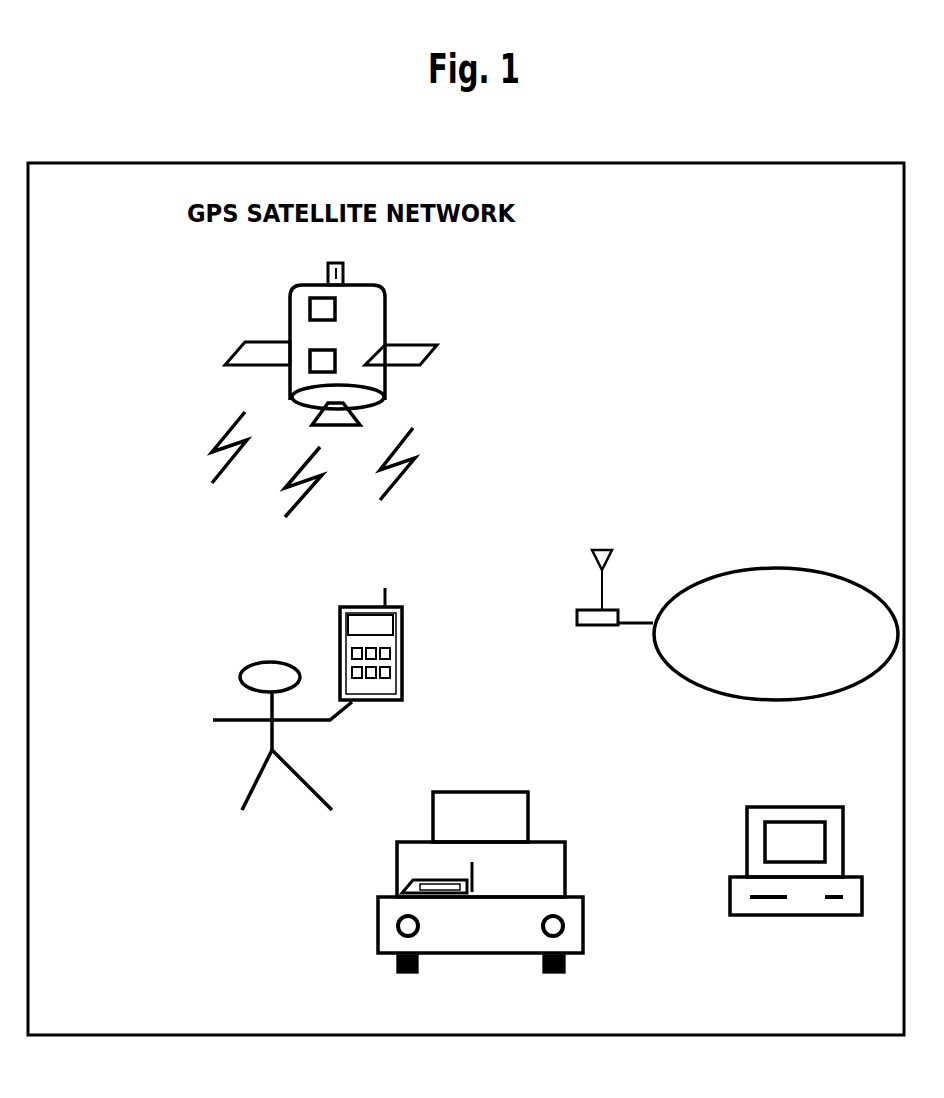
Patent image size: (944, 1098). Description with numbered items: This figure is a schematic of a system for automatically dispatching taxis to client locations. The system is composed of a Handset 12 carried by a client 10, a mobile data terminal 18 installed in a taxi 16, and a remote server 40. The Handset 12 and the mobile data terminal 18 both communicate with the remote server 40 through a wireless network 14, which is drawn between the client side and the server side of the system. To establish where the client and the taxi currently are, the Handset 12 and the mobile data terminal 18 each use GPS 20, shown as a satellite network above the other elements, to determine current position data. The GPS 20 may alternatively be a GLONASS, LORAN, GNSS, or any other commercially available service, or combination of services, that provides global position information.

The client 10 is at (282, 696).
The Handset 12 is at (370, 615).
The wireless network 14 is at (737, 596).
The taxi 16 is at (480, 844).
The mobile data terminal 18 is at (387, 866).
The GPS 20 is at (285, 390).
The remote server 40 is at (796, 863).